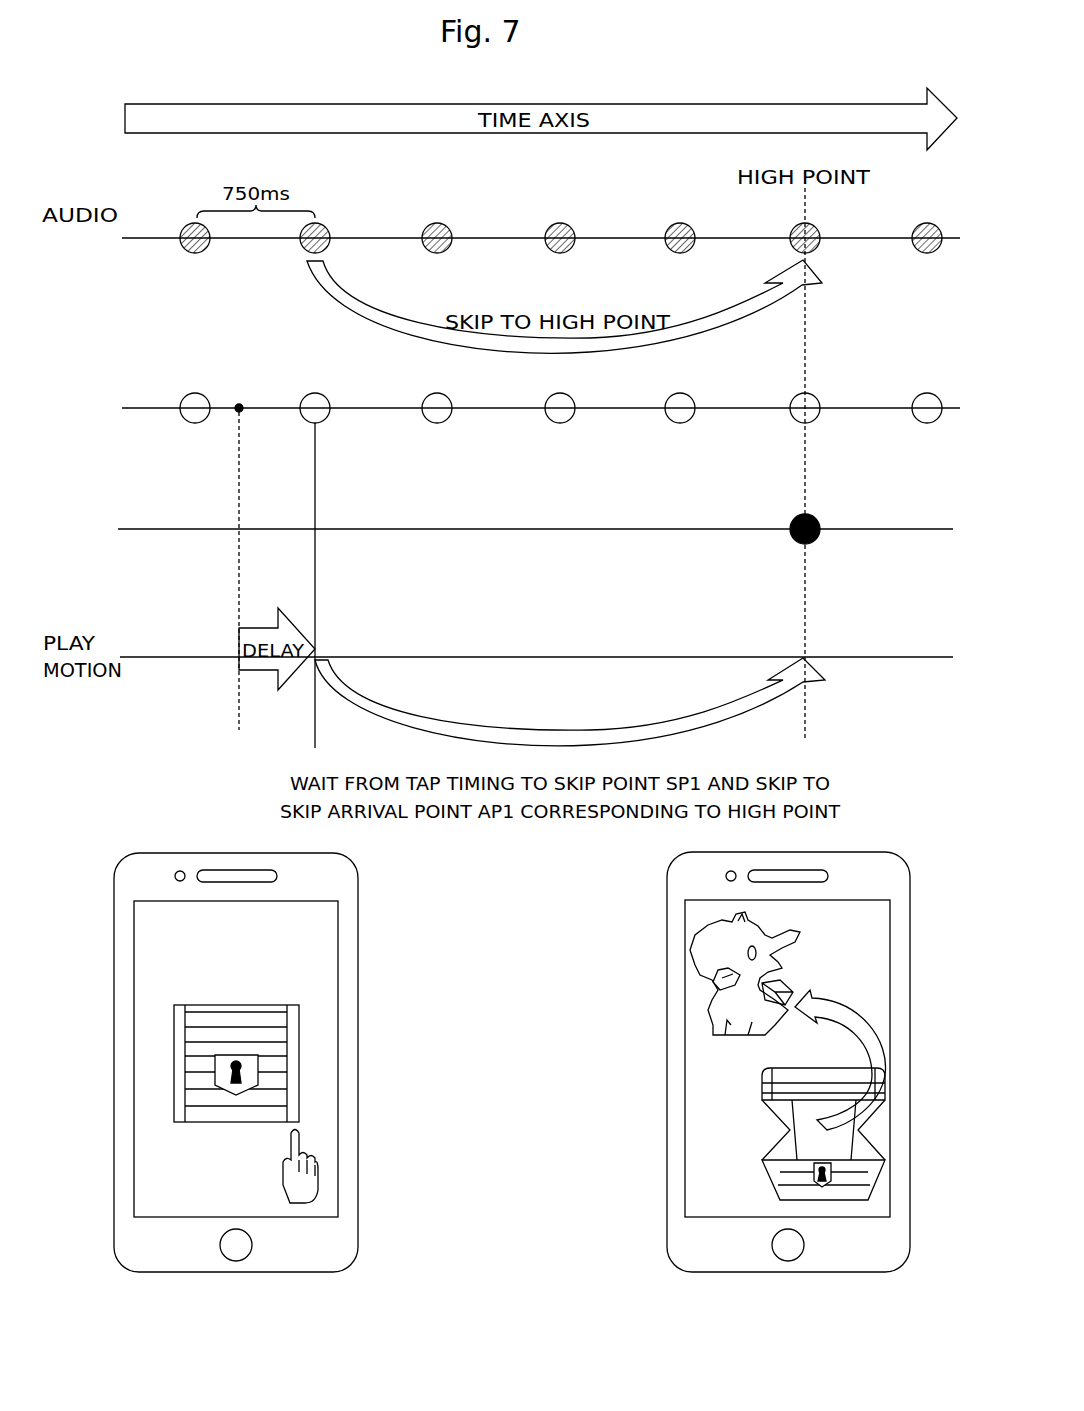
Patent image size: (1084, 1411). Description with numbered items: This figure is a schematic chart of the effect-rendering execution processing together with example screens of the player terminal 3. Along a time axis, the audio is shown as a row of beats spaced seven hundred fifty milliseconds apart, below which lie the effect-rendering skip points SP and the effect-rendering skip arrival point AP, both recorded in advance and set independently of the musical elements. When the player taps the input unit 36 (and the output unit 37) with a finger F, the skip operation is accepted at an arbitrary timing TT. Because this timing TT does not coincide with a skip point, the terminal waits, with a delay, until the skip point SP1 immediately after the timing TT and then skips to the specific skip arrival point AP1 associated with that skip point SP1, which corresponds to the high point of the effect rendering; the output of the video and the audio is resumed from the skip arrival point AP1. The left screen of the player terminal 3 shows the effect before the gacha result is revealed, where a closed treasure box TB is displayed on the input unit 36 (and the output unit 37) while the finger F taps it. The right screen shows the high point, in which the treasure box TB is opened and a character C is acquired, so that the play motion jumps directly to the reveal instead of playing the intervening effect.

The player terminal 3 is at (358, 925).
The input unit 36 is at (538, 1008).
The output unit 37 is at (326, 1023).
The treasure box TB is at (297, 1085).
The player's finger F is at (318, 1173).
The character C is at (720, 1020).
The timing of accepting the skip operation TT is at (238, 551).
The effect-rendering skip points SP is at (501, 409).
The skip point SP1 is at (325, 418).
The effect-rendering skip arrival point AP is at (498, 530).
The specific skip arrival point AP1 is at (815, 540).